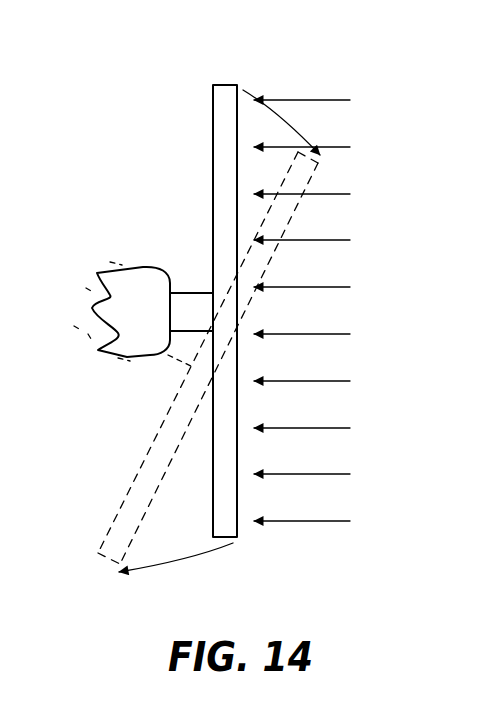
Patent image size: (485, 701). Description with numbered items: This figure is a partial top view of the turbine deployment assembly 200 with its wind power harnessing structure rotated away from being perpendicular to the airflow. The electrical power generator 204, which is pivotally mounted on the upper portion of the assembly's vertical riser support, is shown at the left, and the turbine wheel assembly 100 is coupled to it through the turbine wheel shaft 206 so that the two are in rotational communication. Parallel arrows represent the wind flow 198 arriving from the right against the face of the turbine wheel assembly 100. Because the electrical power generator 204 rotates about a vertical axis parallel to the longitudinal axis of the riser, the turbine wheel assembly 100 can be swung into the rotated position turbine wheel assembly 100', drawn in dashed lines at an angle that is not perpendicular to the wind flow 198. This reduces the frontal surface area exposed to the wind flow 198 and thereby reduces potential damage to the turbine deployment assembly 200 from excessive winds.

The turbine wheel assembly 100 is at (178, 279).
The rotated position turbine wheel assembly 100' is at (279, 331).
The wind flow 198 is at (329, 88).
The turbine deployment assembly 200 is at (147, 150).
The electrical power generator 204 is at (118, 282).
The turbine wheel shaft 206 is at (190, 310).